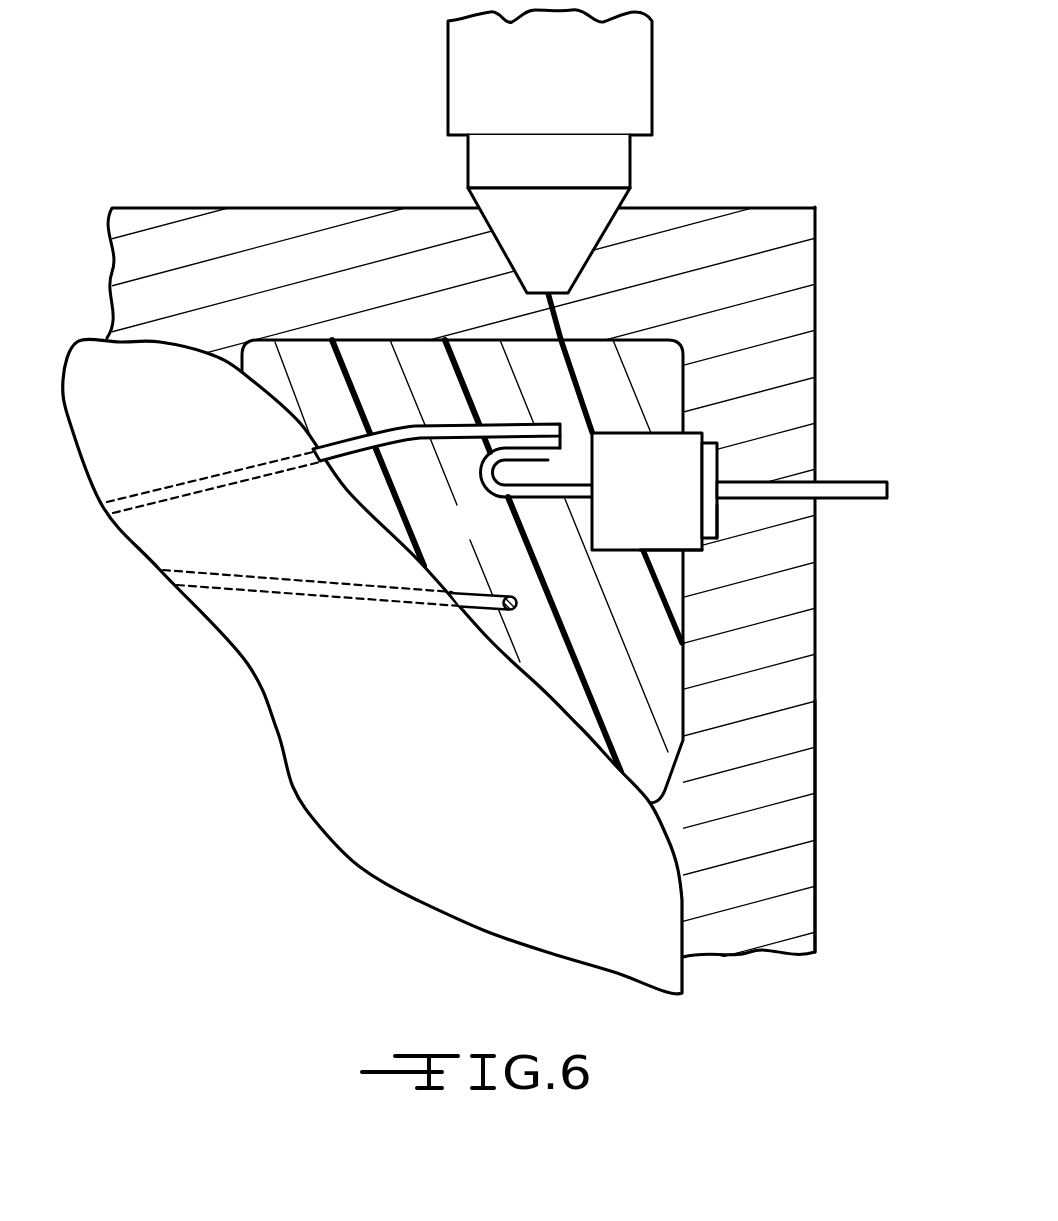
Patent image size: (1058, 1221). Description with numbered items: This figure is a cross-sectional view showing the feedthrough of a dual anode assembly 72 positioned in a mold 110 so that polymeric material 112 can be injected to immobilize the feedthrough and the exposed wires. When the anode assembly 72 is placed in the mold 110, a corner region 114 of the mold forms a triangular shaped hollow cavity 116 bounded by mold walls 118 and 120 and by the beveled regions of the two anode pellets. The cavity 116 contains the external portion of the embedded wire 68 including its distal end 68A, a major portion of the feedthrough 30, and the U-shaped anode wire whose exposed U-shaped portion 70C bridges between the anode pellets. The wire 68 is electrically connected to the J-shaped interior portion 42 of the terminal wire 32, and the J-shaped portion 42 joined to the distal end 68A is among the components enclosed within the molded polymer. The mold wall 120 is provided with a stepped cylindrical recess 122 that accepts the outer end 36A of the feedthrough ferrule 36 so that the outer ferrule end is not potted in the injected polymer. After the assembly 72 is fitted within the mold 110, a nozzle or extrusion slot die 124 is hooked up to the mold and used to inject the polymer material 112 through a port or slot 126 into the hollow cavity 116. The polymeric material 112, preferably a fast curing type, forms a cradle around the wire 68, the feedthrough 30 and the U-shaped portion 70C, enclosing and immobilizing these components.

The mold 110 is at (203, 182).
The mold wall 118 is at (397, 207).
The corner region of the mold 114 is at (723, 202).
The mold wall 120 is at (815, 775).
The triangular shaped hollow cavity 116 is at (658, 655).
The polymeric material 112 is at (483, 538).
The nozzle or extrusion slot die 124 is at (652, 88).
The port or slot 126 is at (566, 320).
The anode assembly 72 is at (330, 868).
The wire 68 is at (343, 437).
The distal end of wire 68A is at (548, 458).
The J-shaped interior portion 42 is at (548, 462).
The U-shaped portion of anode wire 70C is at (515, 607).
The feedthrough 30 is at (717, 435).
The outer end of feedthrough ferrule 36A is at (708, 468).
The terminal wire 32 is at (850, 481).
The stepped cylindrical recess 122 is at (717, 517).
The feedthrough ferrule 36 is at (668, 550).